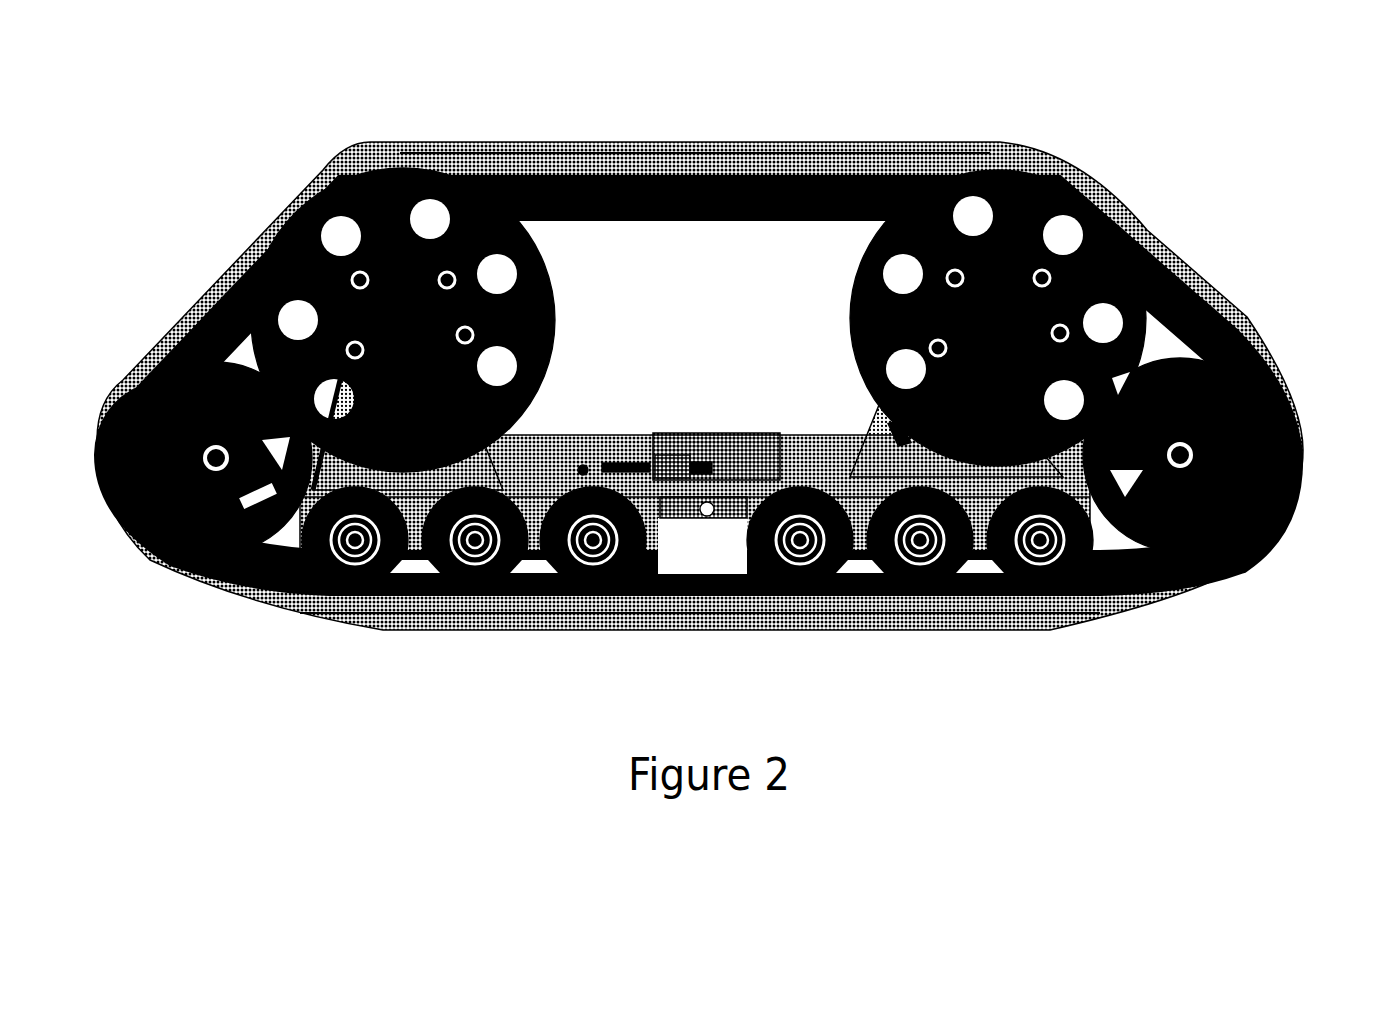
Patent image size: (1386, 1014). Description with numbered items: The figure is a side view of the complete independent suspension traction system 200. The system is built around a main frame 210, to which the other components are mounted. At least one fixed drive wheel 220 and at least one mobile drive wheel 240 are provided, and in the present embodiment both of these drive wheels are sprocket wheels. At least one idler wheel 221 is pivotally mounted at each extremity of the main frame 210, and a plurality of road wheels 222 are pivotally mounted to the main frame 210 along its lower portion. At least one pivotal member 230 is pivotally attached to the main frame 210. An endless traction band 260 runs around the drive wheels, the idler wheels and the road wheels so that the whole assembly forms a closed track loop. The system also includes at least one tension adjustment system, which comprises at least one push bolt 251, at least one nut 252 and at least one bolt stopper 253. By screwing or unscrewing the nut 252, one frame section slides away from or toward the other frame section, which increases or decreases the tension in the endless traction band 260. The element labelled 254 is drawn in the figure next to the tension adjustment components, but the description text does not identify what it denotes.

The independent suspension traction system 200 is at (590, 125).
The main frame 210 is at (380, 452).
The fixed drive wheel 220 is at (330, 188).
The idler wheel 221 is at (203, 360).
The road wheel 222 is at (930, 567).
The pivotal member 230 is at (993, 370).
The mobile drive wheel 240 is at (1080, 197).
The push bolt 251 is at (703, 460).
The nut 252 is at (657, 476).
The bolt stopper 253 is at (597, 462).
The sensor 254 is at (583, 466).
The endless traction band 260 is at (1097, 598).